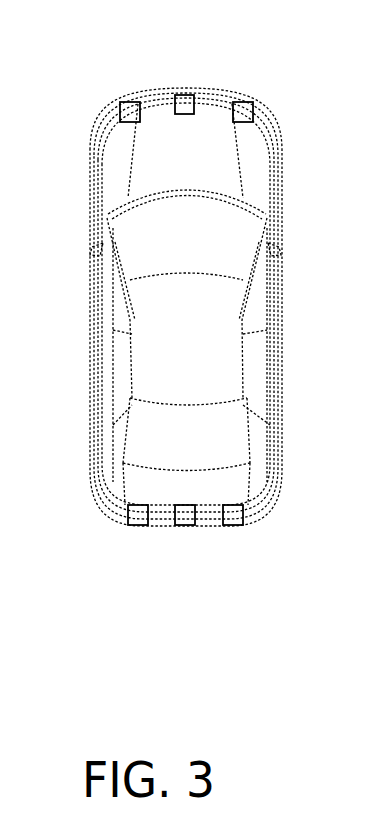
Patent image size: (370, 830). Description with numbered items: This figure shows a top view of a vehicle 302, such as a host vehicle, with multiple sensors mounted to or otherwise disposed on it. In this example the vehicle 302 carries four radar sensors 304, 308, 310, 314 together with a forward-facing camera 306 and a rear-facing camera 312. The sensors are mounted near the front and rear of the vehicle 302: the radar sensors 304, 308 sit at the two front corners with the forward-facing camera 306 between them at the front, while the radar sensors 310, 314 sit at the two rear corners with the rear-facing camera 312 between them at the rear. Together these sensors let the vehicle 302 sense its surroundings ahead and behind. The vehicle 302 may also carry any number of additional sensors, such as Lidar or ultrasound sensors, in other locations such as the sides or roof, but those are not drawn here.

The vehicle 302 is at (205, 330).
The radar sensor 304 is at (123, 103).
The forward-facing camera 306 is at (182, 95).
The radar sensor 308 is at (242, 102).
The radar sensor 310 is at (138, 523).
The rear-facing camera 312 is at (182, 520).
The radar sensor 314 is at (230, 522).